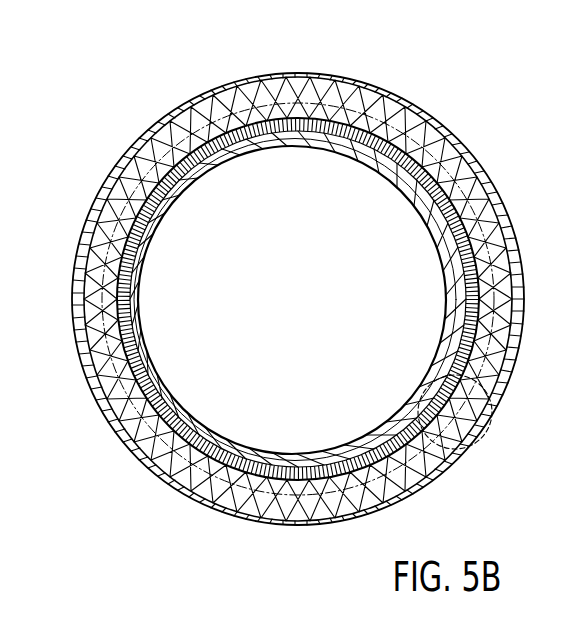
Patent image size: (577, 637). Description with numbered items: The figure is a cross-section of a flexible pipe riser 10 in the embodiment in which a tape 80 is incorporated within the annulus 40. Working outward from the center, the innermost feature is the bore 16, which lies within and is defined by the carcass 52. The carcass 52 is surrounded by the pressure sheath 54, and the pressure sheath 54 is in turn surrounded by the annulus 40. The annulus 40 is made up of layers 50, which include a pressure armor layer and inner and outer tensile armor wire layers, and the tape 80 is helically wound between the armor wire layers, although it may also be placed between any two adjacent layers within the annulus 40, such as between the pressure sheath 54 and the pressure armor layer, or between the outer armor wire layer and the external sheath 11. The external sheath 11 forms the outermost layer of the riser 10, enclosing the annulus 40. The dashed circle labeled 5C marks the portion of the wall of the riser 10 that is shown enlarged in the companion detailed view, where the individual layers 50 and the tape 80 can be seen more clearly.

The flexible pipe riser 10 is at (118, 85).
The external sheath 11 is at (413, 111).
The tape 80 is at (103, 210).
The pressure sheath 54 is at (343, 135).
The carcass 52 is at (397, 163).
The layers 50 is at (482, 218).
The annulus 40 is at (489, 278).
The bore 16 is at (288, 292).
The detail region of FIG. 5C is at (497, 404).